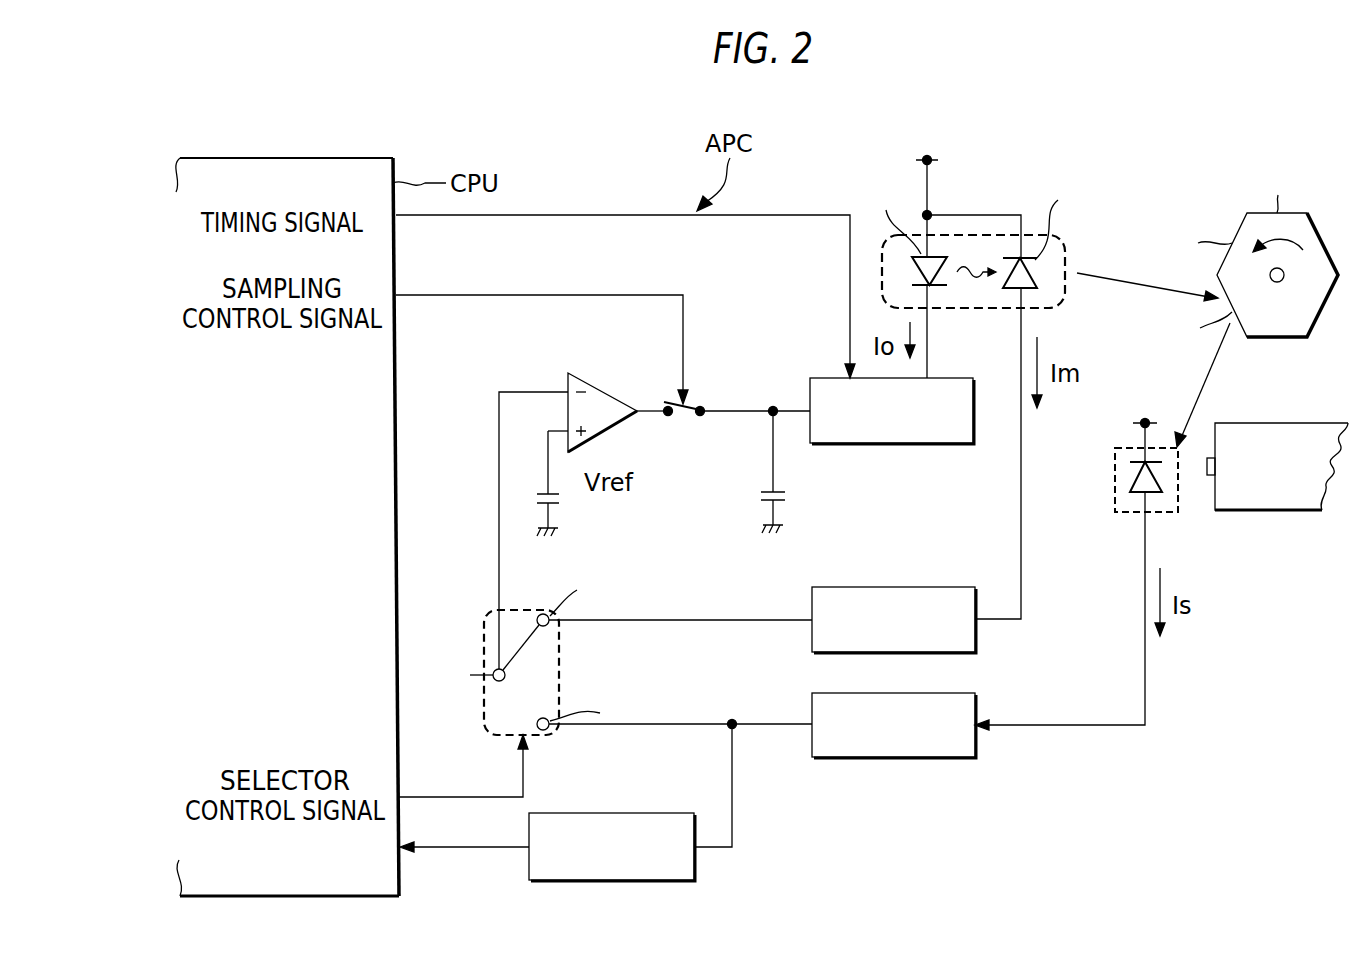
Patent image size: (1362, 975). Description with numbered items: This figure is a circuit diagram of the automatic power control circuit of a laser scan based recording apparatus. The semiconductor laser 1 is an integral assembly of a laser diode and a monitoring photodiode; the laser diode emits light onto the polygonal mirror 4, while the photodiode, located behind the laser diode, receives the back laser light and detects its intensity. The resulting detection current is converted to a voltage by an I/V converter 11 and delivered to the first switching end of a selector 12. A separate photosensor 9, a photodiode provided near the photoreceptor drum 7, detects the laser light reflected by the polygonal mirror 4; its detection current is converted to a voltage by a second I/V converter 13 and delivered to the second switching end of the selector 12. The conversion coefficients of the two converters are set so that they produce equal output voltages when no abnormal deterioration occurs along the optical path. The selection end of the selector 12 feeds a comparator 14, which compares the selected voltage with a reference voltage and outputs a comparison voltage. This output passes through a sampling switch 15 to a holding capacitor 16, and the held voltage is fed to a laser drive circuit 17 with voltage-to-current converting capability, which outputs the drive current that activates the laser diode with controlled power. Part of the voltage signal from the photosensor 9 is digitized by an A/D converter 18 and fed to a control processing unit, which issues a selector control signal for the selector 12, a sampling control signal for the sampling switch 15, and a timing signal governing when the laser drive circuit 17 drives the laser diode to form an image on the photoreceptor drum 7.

The semiconductor laser 1 is at (1066, 255).
The polygonal mirror 4 is at (1285, 338).
The photoreceptor drum 7 is at (1287, 512).
The photosensor 9 is at (1120, 515).
The I/V converter 11 is at (892, 585).
The selector 12 is at (560, 655).
The I/V converter 13 is at (893, 760).
The comparator 14 is at (600, 398).
The sampling switch 15 is at (698, 400).
The holding capacitor 16 is at (790, 496).
The laser drive circuit 17 is at (891, 447).
The A/D converter 18 is at (610, 812).